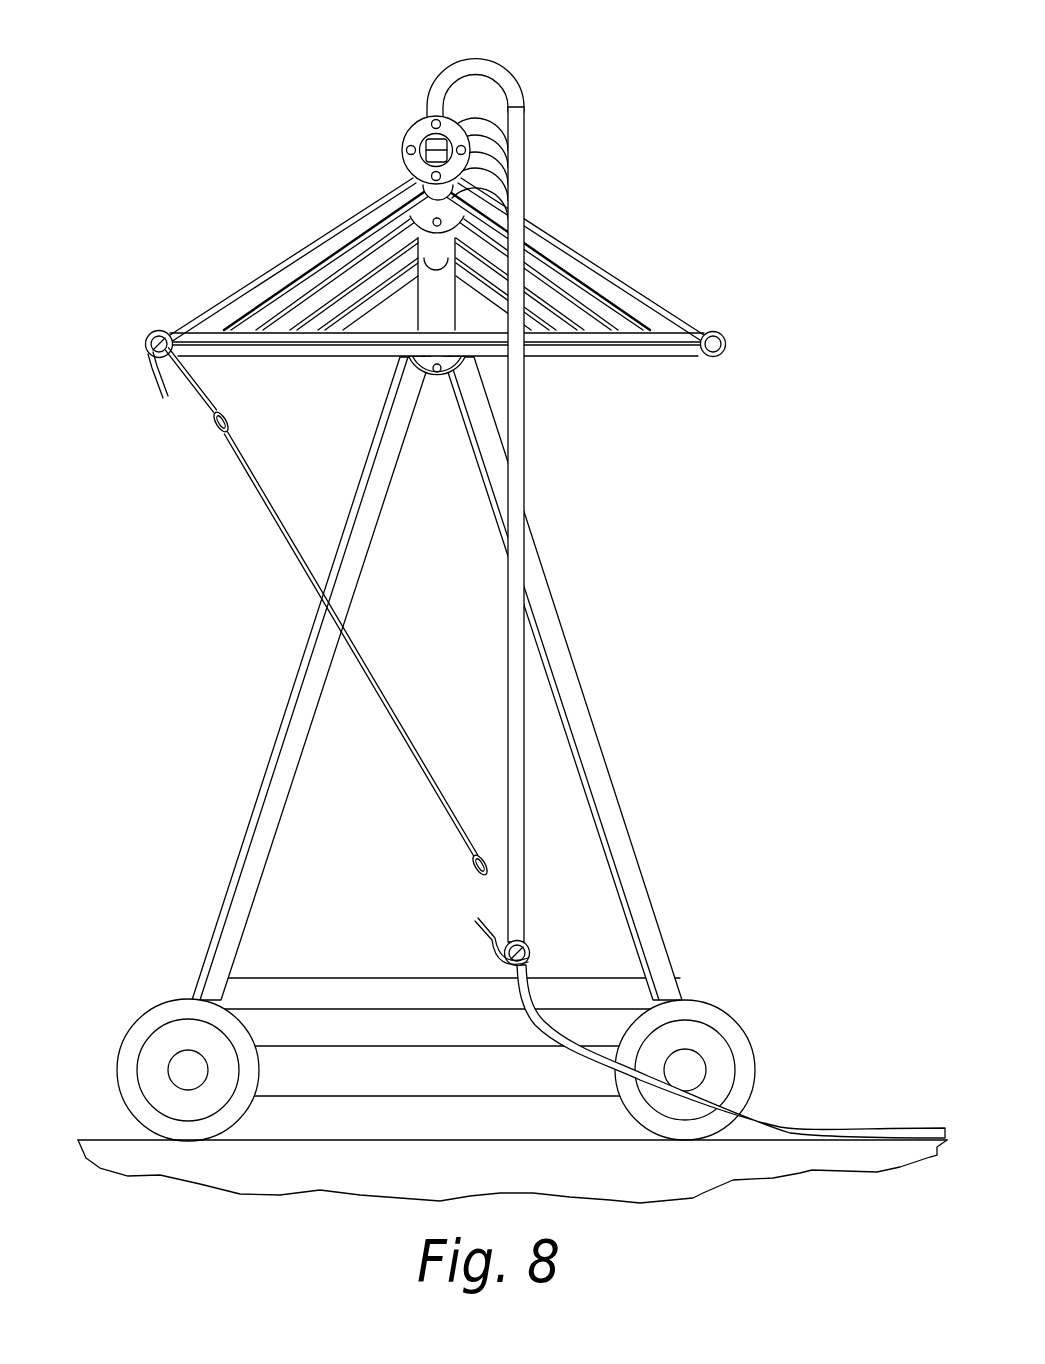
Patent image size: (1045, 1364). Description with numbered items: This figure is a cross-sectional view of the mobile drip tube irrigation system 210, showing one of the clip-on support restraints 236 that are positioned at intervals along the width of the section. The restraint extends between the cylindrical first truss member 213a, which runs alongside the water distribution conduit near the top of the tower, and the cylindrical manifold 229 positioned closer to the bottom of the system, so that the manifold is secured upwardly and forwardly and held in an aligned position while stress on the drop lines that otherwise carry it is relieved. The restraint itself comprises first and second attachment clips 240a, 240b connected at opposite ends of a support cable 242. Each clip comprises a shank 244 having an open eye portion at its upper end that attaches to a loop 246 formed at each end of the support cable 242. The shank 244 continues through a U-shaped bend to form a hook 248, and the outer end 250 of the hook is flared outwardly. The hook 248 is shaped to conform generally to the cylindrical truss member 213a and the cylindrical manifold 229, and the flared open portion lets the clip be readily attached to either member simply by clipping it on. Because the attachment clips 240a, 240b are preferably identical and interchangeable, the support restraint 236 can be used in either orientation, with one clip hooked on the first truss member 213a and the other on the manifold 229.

The mobile drip tube irrigation system 210 is at (558, 46).
The clip-on support restraint 236 is at (141, 318).
The first truss member 213a is at (163, 335).
The hook 248 is at (147, 340).
The first attachment clip 240a is at (146, 381).
The outer end of the hook 250 is at (168, 397).
The shank 244 is at (203, 389).
The loop 246 is at (227, 424).
The support cable 242 is at (282, 528).
The manifold 229 is at (530, 958).
The second attachment clip 240b is at (462, 939).